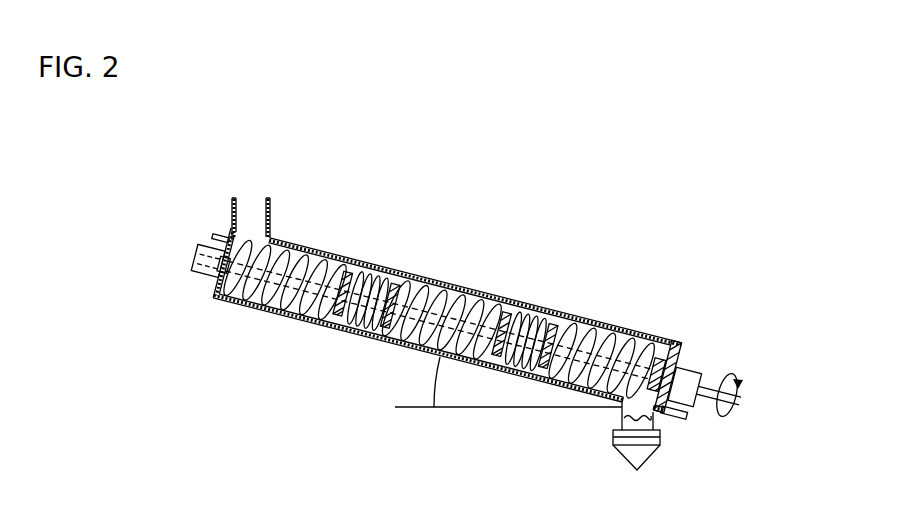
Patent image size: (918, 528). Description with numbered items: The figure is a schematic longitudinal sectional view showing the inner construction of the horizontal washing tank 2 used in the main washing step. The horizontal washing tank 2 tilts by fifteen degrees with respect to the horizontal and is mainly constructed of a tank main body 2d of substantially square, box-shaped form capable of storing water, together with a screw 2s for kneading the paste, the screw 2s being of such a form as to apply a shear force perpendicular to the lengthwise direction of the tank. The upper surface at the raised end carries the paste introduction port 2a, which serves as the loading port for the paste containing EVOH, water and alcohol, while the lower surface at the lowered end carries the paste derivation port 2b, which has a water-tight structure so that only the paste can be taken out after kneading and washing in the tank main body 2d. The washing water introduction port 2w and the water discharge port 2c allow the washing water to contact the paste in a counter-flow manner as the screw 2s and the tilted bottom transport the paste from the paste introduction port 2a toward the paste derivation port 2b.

The horizontal washing tank 2 is at (475, 280).
The paste introduction port 2a is at (271, 218).
The paste derivation port 2b is at (620, 418).
The water discharge port 2c is at (213, 237).
The tank main body 2d is at (304, 322).
The screw 2s is at (556, 321).
The washing water introduction port 2w is at (677, 411).